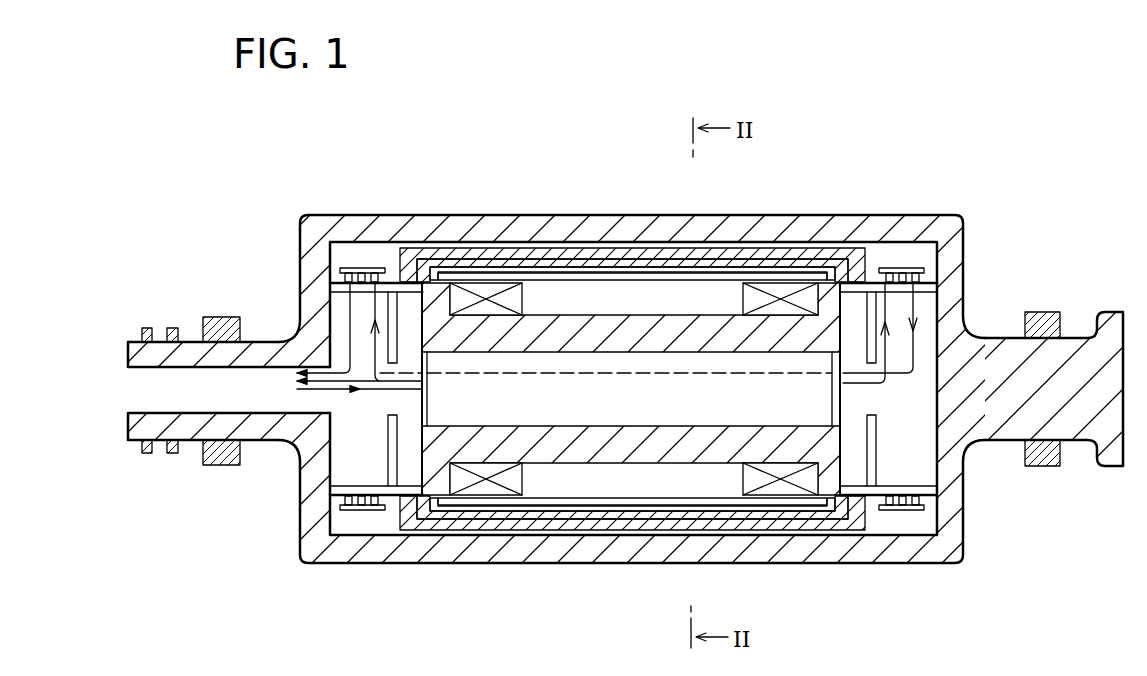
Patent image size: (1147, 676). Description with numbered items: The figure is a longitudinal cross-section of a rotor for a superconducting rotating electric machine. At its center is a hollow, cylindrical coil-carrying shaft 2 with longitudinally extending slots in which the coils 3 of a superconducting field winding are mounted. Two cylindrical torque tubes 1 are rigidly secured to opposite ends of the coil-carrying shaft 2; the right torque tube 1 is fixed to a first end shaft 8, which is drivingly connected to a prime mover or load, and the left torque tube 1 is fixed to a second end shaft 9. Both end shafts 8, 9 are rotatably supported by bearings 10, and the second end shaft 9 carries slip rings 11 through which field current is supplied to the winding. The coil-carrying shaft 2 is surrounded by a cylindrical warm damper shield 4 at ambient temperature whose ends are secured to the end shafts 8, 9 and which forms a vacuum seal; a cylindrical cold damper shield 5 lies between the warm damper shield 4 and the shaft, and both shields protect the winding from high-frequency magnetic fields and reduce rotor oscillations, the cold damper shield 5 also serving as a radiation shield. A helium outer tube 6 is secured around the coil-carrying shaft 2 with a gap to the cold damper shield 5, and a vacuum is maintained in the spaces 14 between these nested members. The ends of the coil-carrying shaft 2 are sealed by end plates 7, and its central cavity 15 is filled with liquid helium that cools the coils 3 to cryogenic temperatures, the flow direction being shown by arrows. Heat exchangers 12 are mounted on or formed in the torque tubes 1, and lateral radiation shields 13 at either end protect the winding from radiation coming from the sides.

The torque tube 1 is at (848, 488).
The coil-carrying shaft 2 is at (630, 433).
The coils 3 is at (500, 468).
The warm damper shield 4 is at (610, 227).
The cold damper shield 5 is at (760, 247).
The helium outer tube 6 is at (562, 508).
The end plates 7 is at (430, 393).
The first end shaft 8 is at (998, 425).
The second end shaft 9 is at (268, 445).
The bearings 10 is at (225, 466).
The slip rings 11 is at (172, 455).
The heat exchangers 12 is at (905, 485).
The lateral radiation shields 13 is at (388, 461).
The spaces 14 is at (468, 262).
The central cavity 15 is at (820, 400).